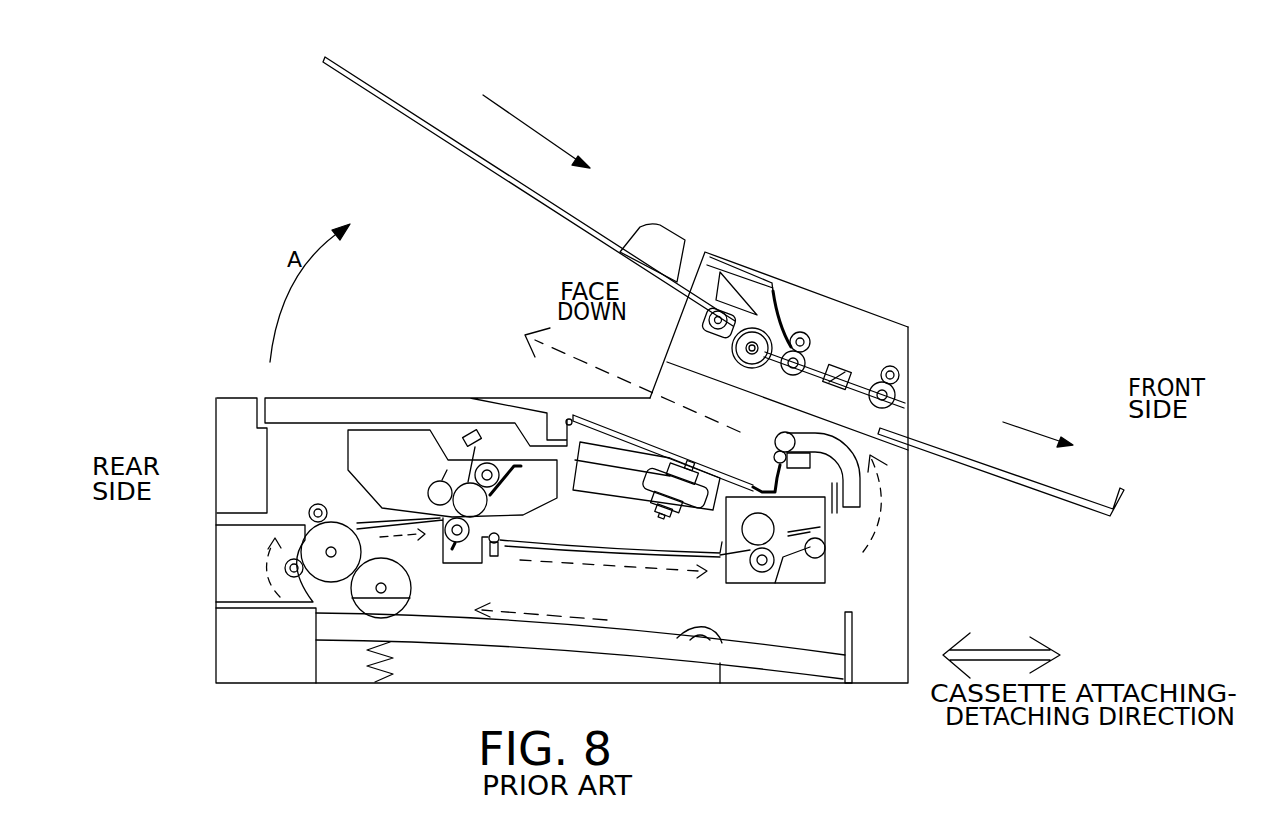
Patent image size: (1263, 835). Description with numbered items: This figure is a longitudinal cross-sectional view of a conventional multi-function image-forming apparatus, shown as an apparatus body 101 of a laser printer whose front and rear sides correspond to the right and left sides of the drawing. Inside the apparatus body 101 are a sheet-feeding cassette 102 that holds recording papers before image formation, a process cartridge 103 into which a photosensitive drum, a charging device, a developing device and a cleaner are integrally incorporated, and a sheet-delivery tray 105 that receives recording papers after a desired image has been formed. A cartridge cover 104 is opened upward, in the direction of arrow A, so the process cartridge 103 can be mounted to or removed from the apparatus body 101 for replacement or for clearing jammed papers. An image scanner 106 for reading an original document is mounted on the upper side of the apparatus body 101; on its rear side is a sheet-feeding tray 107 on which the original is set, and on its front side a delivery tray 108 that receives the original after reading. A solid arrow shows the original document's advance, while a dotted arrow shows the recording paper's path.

The apparatus body 101 is at (242, 407).
The sheet-feeding cassette 102 is at (278, 665).
The process cartridge 103 is at (412, 445).
The cartridge cover 104 is at (322, 405).
The sheet-delivery tray 105 is at (600, 423).
The image scanner 106 is at (833, 316).
The sheet-feeding tray 107 is at (410, 108).
The delivery tray 108 is at (967, 432).